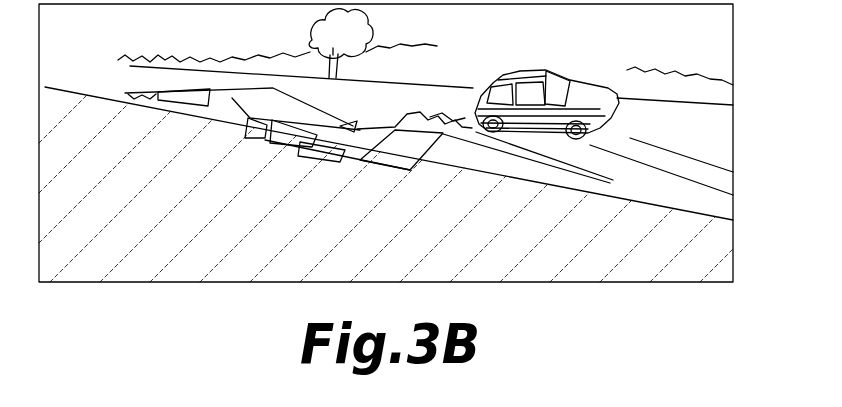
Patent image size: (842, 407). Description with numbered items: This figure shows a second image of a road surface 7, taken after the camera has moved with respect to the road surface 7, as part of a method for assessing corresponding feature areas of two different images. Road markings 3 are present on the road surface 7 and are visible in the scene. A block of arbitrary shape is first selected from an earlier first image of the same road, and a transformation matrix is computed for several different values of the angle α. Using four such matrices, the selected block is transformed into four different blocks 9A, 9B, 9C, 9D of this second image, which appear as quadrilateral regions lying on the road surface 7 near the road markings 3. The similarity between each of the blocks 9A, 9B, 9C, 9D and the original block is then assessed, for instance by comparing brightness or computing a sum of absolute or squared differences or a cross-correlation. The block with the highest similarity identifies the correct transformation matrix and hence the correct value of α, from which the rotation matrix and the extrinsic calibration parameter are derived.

The road markings 3 is at (525, 160).
The road surface 7 is at (733, 138).
The block 9A is at (253, 139).
The block 9B is at (290, 146).
The block 9C is at (338, 155).
The block 9D is at (387, 166).